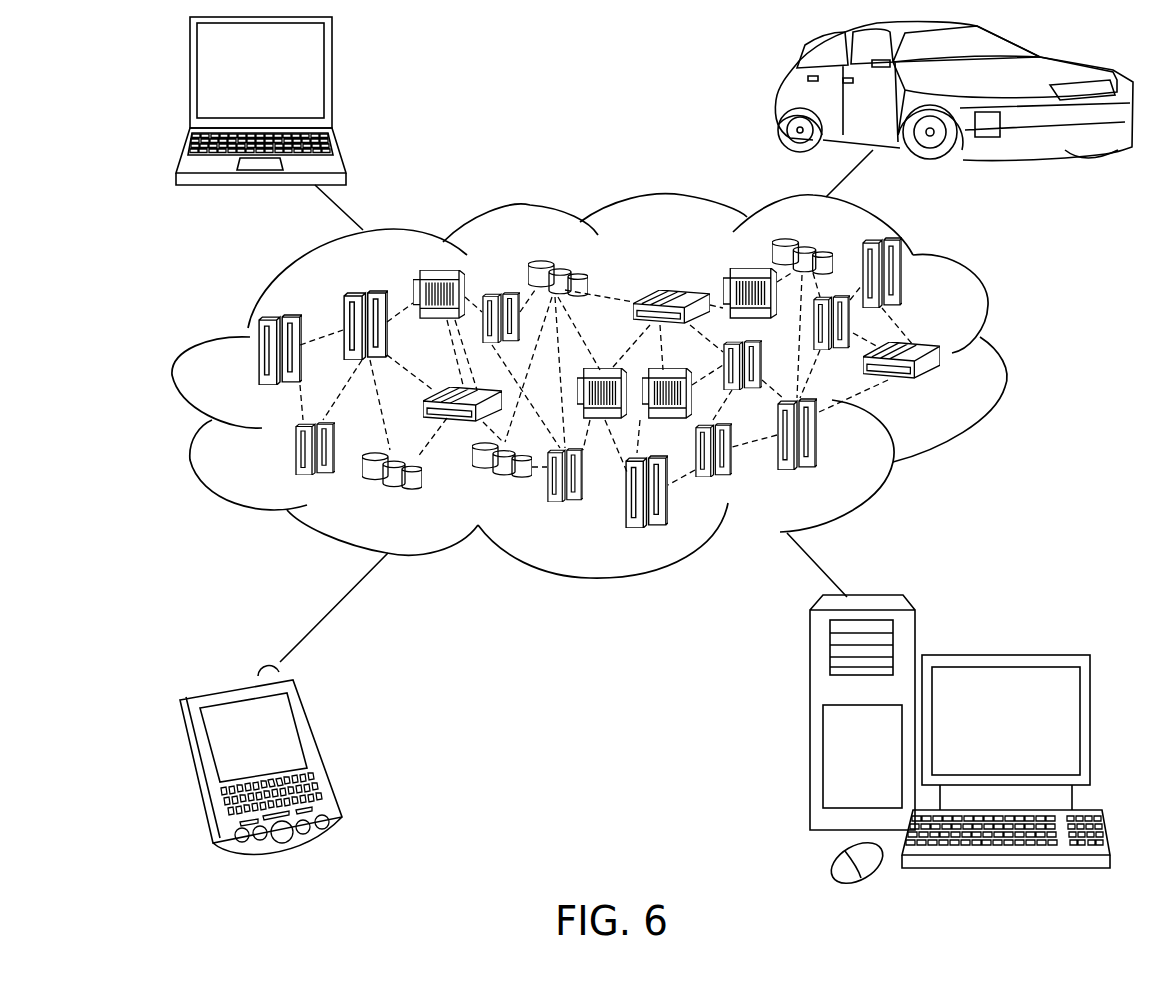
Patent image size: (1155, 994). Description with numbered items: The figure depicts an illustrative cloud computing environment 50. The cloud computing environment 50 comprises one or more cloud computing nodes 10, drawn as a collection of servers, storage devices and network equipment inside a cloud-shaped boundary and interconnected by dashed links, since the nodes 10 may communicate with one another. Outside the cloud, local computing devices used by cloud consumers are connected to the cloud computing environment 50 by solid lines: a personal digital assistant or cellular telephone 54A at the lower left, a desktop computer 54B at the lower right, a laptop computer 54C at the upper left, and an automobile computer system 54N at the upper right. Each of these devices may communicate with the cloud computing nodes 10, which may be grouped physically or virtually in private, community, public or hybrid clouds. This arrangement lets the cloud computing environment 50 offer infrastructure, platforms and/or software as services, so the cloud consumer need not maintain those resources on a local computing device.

The cloud computing node 10 is at (945, 390).
The cloud computing environment 50 is at (1007, 362).
The personal digital assistant or cellular telephone 54A is at (318, 752).
The desktop computer 54B is at (1003, 655).
The laptop computer 54C is at (331, 80).
The automobile computer system 54N is at (780, 97).